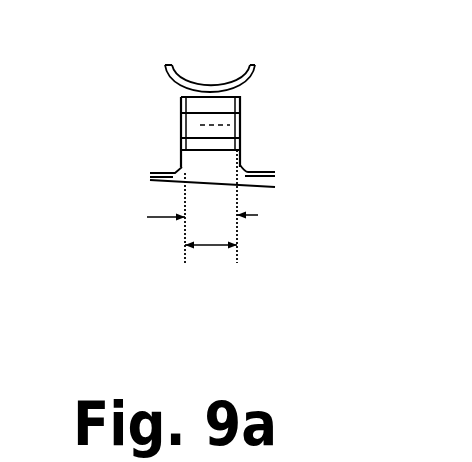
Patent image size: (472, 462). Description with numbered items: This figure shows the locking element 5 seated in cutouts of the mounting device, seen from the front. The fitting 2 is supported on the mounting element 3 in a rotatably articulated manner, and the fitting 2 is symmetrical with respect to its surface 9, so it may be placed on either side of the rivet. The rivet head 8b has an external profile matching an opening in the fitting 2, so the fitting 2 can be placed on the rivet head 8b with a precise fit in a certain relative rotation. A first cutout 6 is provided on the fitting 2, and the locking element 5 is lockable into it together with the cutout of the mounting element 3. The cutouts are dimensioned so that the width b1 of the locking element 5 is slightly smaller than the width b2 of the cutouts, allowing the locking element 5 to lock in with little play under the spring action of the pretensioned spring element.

The surface 9 is at (128, 85).
The rivet head 8b is at (230, 74).
The fitting 2 is at (258, 127).
The locking element 5 is at (193, 132).
The first cutout 6 is at (182, 167).
The mounting element 3 is at (217, 166).
The width of the locking element b1 is at (211, 269).
The width of the cutouts b2 is at (229, 215).